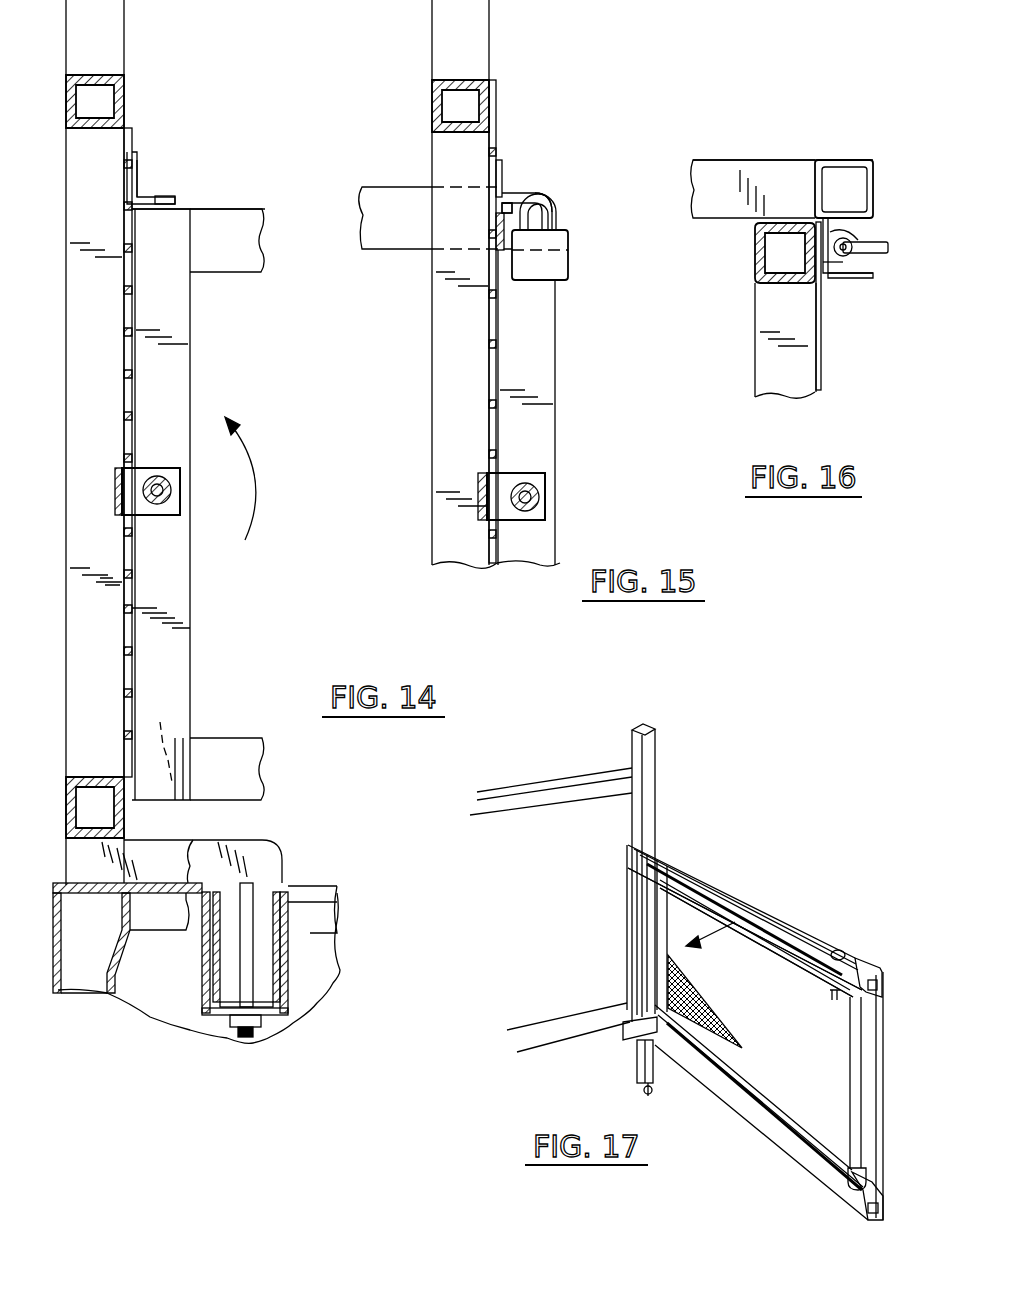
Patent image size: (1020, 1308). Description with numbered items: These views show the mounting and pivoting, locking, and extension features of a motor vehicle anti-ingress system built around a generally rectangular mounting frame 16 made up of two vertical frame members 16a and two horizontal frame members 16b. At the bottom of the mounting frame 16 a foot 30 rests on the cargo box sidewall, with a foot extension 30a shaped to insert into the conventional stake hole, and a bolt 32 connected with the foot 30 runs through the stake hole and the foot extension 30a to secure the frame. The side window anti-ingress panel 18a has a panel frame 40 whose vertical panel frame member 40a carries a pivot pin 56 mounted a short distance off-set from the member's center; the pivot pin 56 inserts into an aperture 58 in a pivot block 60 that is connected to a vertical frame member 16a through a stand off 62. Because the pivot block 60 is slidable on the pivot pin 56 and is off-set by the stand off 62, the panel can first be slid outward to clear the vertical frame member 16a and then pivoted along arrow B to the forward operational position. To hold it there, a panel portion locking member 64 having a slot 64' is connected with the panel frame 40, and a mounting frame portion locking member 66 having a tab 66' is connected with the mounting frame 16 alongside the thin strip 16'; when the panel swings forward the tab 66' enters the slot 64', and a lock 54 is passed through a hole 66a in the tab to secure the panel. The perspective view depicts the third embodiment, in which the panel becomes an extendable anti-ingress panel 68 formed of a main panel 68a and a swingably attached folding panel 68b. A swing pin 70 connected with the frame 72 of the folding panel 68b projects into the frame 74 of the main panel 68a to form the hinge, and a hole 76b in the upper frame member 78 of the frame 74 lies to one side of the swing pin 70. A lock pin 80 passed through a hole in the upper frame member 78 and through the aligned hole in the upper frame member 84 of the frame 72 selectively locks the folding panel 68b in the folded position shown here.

In FIG. 14, the mounting frame 16 is at (122, 442).
In FIG. 15, the mounting frame 16 is at (478, 284).
In FIG. 16, the mounting frame 16 is at (760, 340).
In FIG. 14, the post strip 16' is at (154, 433).
In FIG. 15, the post strip 16' is at (513, 321).
In FIG. 16, the post strip 16' is at (818, 306).
In FIG. 16, the vertical frame member 16a is at (755, 242).
In FIG. 17, the vertical frame member 16a is at (660, 802).
In FIG. 17, the horizontal frame member 16b is at (548, 790).
In FIG. 14, the side window anti-ingress panel 18a is at (215, 208).
In FIG. 16, the side window anti-ingress panel 18a is at (773, 160).
In FIG. 14, the foot 30 is at (176, 840).
In FIG. 17, the foot 30 is at (622, 1030).
In FIG. 14, the foot extension 30a is at (292, 994).
In FIG. 17, the foot extension 30a is at (660, 1078).
In FIG. 14, the bolt 32 is at (254, 963).
In FIG. 17, the bolt 32 is at (643, 1092).
In FIG. 14, the panel frame 40 is at (245, 210).
In FIG. 15, the panel frame 40 is at (414, 250).
In FIG. 16, the panel frame 40 is at (744, 186).
In FIG. 14, the vertical panel frame member 40a is at (192, 342).
In FIG. 15, the vertical panel frame member 40a is at (557, 375).
In FIG. 16, the vertical panel frame member 40a is at (843, 160).
In FIG. 15, the lock 54 is at (570, 264).
In FIG. 16, the lock 54 is at (878, 240).
In FIG. 14, the pivot pin 56 is at (180, 494).
In FIG. 15, the pivot pin 56 is at (542, 507).
In FIG. 14, the aperture 58 is at (166, 482).
In FIG. 15, the aperture 58 is at (538, 487).
In FIG. 14, the pivot block 60 is at (148, 468).
In FIG. 15, the pivot block 60 is at (530, 520).
In FIG. 14, the stand off 62 is at (116, 516).
In FIG. 15, the stand off 62 is at (484, 472).
In FIG. 14, the panel portion locking member 64 is at (165, 746).
In FIG. 15, the panel portion locking member 64 is at (473, 231).
In FIG. 16, the panel portion locking member 64 is at (848, 302).
In FIG. 14, the slot 64' is at (227, 769).
In FIG. 15, the slot 64' is at (476, 206).
In FIG. 16, the slot 64' is at (844, 189).
In FIG. 14, the mounting frame portion locking member 66 is at (151, 168).
In FIG. 15, the mounting frame portion locking member 66 is at (524, 195).
In FIG. 16, the mounting frame portion locking member 66 is at (869, 265).
In FIG. 14, the tab 66' is at (179, 156).
In FIG. 15, the tab 66' is at (570, 190).
In FIG. 14, the hole 66a is at (172, 197).
In FIG. 15, the hole 66a is at (560, 217).
In FIG. 16, the hole 66a is at (860, 268).
In FIG. 17, the extendable anti-ingress panel 68 is at (768, 903).
In FIG. 17, the main panel 68a is at (733, 888).
In FIG. 17, the folding panel 68b is at (818, 976).
In FIG. 17, the swing pin 70 is at (848, 1052).
In FIG. 17, the frame 72 is at (822, 982).
In FIG. 17, the frame 74 is at (795, 922).
In FIG. 17, the hole 76b is at (885, 957).
In FIG. 17, the upper frame member 78 is at (842, 948).
In FIG. 17, the lock pin 80 is at (834, 1001).
In FIG. 17, the upper frame member 84 is at (762, 940).
In FIG. 14, the arrow B is at (270, 482).